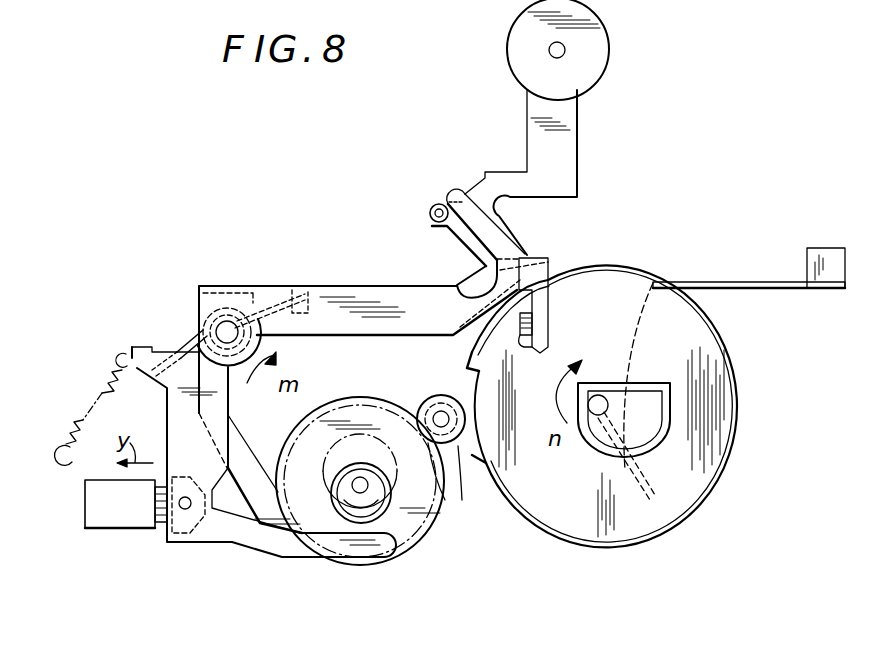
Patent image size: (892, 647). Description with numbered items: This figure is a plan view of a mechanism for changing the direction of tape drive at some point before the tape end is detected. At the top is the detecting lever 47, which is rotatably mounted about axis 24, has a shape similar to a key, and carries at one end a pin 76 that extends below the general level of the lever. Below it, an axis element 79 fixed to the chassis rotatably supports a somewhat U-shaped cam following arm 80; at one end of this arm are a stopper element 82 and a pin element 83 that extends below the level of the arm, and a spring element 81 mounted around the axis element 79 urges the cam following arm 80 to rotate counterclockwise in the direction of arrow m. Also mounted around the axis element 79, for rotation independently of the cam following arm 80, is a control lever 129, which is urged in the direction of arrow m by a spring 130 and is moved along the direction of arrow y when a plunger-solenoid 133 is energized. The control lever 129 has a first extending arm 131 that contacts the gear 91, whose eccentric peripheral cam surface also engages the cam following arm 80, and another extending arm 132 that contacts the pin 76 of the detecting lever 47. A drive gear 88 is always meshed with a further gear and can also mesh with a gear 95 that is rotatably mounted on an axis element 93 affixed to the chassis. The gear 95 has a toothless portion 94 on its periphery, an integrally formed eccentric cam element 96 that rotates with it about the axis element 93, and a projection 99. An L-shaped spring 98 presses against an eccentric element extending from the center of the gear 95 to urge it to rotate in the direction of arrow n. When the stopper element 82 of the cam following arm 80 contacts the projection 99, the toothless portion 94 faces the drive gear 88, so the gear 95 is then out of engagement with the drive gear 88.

The axis 24 is at (567, 50).
The detecting lever 47 is at (577, 150).
The extending arm 132 is at (456, 194).
The pin 76 is at (430, 211).
The cam following arm 80 is at (466, 273).
The pin element 83 is at (538, 251).
The stopper element 82 is at (548, 322).
The projection 99 is at (519, 341).
The axis element 79 is at (227, 332).
The spring element 81 is at (184, 350).
The control lever 129 is at (227, 550).
The plunger-solenoid 133 is at (105, 523).
The spring 130 is at (72, 430).
The gear 91 is at (393, 510).
The first extending arm 131 is at (362, 548).
The drive gear 88 is at (450, 442).
The gear 95 is at (733, 388).
The toothless portion 94 is at (468, 369).
The eccentric cam element 96 is at (658, 432).
The axis element 93 is at (594, 434).
The L-shaped spring 98 is at (728, 282).